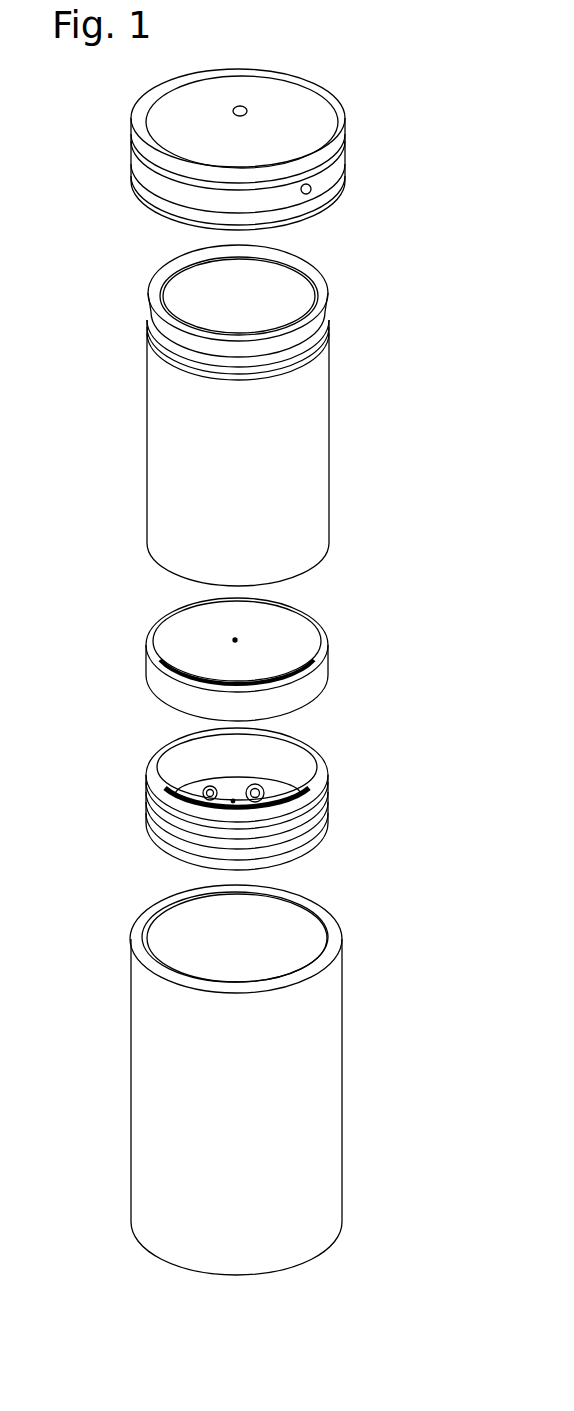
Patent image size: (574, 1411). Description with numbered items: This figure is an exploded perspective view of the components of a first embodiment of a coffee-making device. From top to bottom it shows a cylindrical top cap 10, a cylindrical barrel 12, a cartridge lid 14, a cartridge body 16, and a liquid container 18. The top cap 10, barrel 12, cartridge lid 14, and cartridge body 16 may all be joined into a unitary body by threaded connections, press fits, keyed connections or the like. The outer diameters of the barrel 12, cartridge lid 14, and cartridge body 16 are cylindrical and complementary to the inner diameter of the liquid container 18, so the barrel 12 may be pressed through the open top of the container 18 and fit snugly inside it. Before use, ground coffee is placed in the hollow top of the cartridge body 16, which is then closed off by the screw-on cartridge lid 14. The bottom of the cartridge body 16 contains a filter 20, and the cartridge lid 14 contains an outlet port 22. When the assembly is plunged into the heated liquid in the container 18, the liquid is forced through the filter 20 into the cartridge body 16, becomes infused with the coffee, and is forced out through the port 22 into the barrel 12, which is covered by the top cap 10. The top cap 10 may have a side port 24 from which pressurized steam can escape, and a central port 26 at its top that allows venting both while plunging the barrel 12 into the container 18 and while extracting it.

The top cap 10 is at (353, 105).
The barrel 12 is at (343, 372).
The cartridge lid 14 is at (343, 643).
The cartridge body 16 is at (343, 810).
The liquid container 18 is at (355, 1054).
The filter 20 is at (258, 784).
The outlet port 22 is at (243, 634).
The side port 24 is at (312, 189).
The central port 26 is at (241, 106).